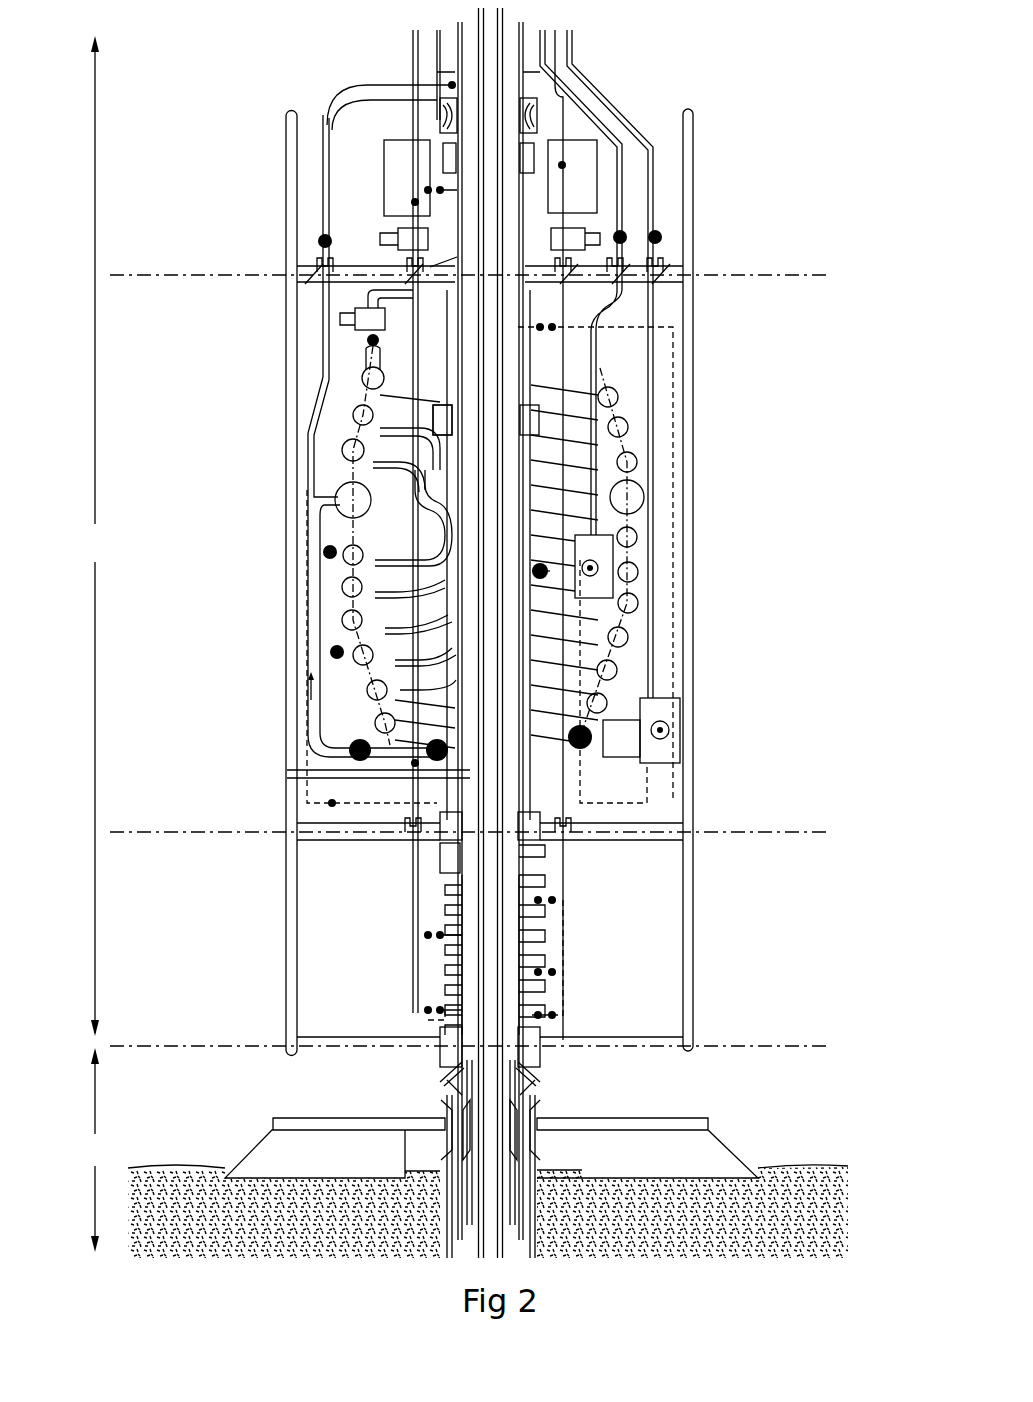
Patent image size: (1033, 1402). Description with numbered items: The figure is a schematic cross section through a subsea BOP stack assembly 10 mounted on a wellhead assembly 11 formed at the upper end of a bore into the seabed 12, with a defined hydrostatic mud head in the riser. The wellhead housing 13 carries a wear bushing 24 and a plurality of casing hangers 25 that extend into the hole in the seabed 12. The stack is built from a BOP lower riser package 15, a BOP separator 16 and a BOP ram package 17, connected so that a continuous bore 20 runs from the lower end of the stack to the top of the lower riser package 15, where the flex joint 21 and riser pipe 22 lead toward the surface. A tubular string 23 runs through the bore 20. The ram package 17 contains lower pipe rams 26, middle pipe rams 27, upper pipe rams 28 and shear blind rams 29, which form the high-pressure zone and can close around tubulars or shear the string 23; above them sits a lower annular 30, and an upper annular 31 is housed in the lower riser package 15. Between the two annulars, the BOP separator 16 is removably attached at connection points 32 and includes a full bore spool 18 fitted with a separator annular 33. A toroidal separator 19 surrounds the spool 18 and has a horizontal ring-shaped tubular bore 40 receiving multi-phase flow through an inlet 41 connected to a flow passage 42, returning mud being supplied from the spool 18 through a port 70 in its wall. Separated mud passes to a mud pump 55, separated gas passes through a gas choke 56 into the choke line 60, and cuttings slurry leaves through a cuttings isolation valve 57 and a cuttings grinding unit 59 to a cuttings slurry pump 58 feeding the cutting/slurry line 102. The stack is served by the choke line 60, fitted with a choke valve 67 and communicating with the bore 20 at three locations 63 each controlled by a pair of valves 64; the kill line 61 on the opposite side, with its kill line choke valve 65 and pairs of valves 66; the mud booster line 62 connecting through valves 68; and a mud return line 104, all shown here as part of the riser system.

The BOP stack assembly 10 is at (97, 536).
The wellhead assembly 11 is at (97, 1150).
The seabed 12 is at (548, 1170).
The wellhead housing 13 is at (528, 1087).
The BOP lower riser package 15 is at (196, 160).
The BOP separator 16 is at (196, 556).
The BOP ram package 17 is at (196, 940).
The full bore spool 18 is at (520, 348).
The toroidal separator 19 is at (645, 497).
The bore 20 is at (507, 927).
The flex joint 21 is at (340, 100).
The riser pipe 22 is at (520, 42).
The tubular string 23 is at (503, 662).
The wear bushing 24 is at (457, 1064).
The casing hangers 25 is at (462, 1150).
The lower pipe rams 26 is at (445, 990).
The middle pipe rams 27 is at (445, 966).
The upper pipe rams 28 is at (445, 912).
The shear blind rams 29 is at (445, 888).
The lower annular 30 is at (440, 848).
The upper annular 31 is at (443, 150).
The connection points 32 is at (403, 265).
The separator annular 33 is at (433, 418).
The tubular bore 40 is at (340, 488).
The inlet 41 is at (333, 502).
The flow passage 42 is at (313, 678).
The mud pump 55 is at (612, 550).
The choke valve 56 is at (340, 320).
The cuttings isolation valve 57 is at (588, 745).
The cuttings slurry pump 58 is at (672, 724).
The cuttings grinding unit 59 is at (632, 752).
The choke line 60 is at (437, 58).
The kill line 61 is at (548, 56).
The mud booster line 62 is at (413, 42).
The locations 63 is at (457, 190).
The pair of valves 64 is at (440, 190).
The kill line choke valve 65 is at (595, 232).
The pair of valves 66 is at (552, 898).
The choke valve 67 is at (380, 240).
The valves 68 is at (337, 652).
The port 70 is at (457, 750).
The cutting/slurry line 102 is at (600, 95).
The mud return line 104 is at (607, 127).